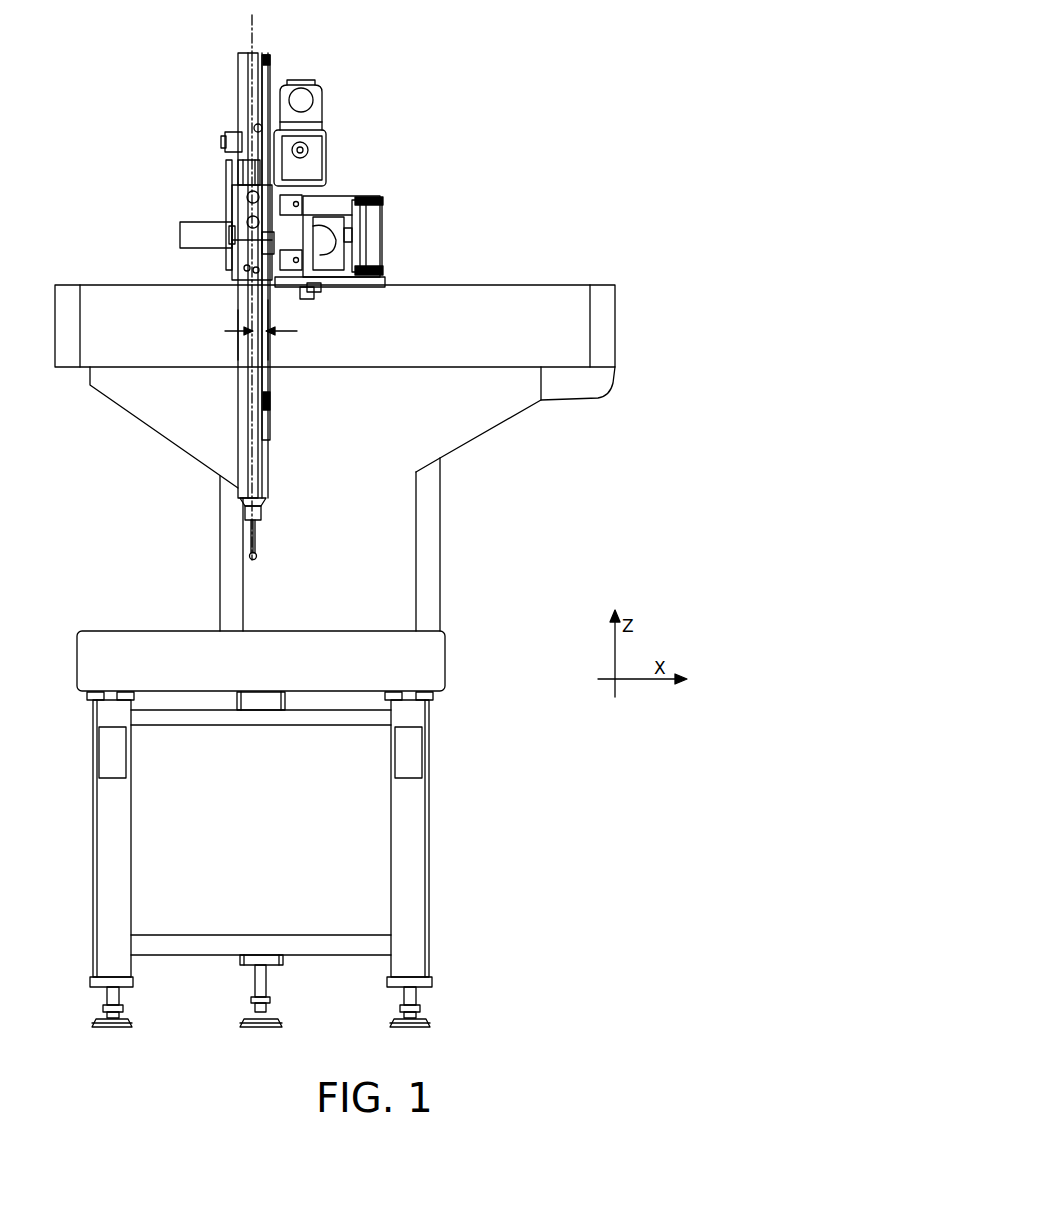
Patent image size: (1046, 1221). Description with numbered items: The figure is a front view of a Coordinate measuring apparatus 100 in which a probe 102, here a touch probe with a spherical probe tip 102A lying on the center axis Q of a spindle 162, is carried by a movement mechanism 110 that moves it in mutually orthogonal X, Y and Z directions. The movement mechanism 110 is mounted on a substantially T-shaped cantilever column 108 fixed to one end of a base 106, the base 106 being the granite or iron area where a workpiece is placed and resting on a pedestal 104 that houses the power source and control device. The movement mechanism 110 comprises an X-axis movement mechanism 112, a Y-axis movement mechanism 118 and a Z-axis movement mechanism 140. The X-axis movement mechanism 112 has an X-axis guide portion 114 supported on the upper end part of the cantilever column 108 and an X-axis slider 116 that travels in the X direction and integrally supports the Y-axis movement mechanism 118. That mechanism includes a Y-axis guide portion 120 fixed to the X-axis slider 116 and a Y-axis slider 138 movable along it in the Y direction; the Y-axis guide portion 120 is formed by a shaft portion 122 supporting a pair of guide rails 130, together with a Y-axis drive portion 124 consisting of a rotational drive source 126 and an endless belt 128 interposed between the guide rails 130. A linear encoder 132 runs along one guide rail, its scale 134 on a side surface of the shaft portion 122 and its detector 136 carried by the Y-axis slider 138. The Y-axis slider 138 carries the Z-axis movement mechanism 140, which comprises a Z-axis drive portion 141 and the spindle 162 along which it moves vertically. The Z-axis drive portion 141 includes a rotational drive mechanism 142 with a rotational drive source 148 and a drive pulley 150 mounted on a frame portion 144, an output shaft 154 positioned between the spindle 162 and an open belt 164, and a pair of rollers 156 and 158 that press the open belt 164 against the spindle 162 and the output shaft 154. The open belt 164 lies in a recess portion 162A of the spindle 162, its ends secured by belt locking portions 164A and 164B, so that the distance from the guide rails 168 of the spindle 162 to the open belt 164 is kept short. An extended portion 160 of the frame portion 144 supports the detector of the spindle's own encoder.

The Coordinate measuring apparatus 100 is at (474, 521).
The probe 102 is at (258, 542).
The probe tip 102A is at (258, 557).
The pedestal 104 is at (363, 833).
The base 106 is at (382, 671).
The cantilever column 108 is at (368, 451).
The movement mechanism 110 is at (505, 301).
The X-axis movement mechanism 112 is at (584, 268).
The X-axis guide portion 114 is at (520, 345).
The X-axis slider 116 is at (378, 283).
The Y-axis movement mechanism 118 is at (491, 239).
The Y-axis guide portion 120 is at (356, 190).
The shaft portion 122 is at (325, 199).
The Y-axis drive portion 124 is at (174, 205).
The rotational drive source 126 is at (185, 236).
The endless belt 128 is at (268, 217).
The pair of guide rails 130 is at (300, 210).
The linear encoder 132 is at (272, 328).
The scale 134 is at (318, 287).
The detector 136 is at (305, 298).
The Y-axis slider 138 is at (246, 271).
The Z-axis movement mechanism 140 is at (390, 301).
The Z-axis drive portion 141 is at (390, 185).
The rotational drive mechanism 142 is at (468, 122).
The frame portion 144 is at (305, 170).
The rotational drive source 148 is at (303, 93).
The drive pulley 150 is at (326, 140).
The output shaft 154 is at (308, 150).
The roller 156 is at (238, 176).
The roller 158 is at (256, 127).
The extended portion 160 is at (225, 136).
The spindle 162 is at (240, 455).
The recess portion 162A is at (265, 338).
The open belt 164 is at (268, 366).
The belt locking portion 164A is at (270, 58).
The belt locking portion 164B is at (270, 405).
The guide rails 168 is at (250, 413).